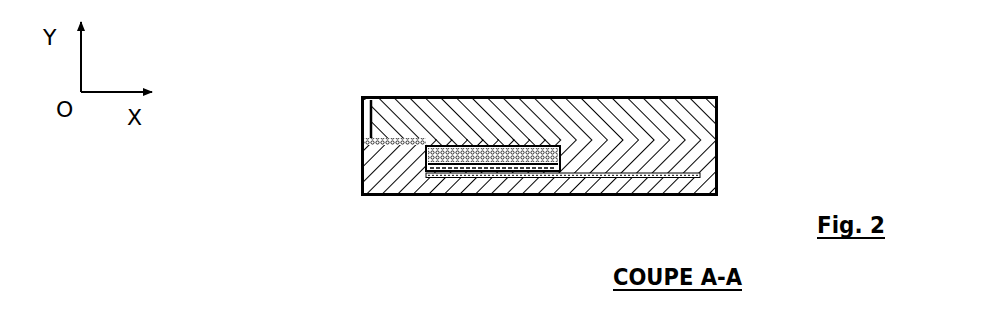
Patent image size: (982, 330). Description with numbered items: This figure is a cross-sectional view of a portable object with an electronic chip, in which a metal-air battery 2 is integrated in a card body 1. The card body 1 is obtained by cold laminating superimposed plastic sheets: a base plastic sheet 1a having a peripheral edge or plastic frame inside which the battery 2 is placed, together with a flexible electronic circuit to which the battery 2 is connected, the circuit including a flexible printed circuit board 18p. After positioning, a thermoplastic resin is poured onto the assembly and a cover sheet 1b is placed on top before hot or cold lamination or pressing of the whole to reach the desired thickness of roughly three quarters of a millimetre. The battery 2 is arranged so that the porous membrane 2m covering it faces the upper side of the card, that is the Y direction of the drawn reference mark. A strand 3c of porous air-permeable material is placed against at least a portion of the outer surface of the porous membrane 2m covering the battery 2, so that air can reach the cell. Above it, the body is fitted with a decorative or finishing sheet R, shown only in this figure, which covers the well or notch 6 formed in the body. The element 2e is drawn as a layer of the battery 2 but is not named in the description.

The decorative or finishing sheet R is at (546, 149).
The card body 1 is at (624, 146).
The base plastic sheet 1a is at (718, 115).
The cover sheet 1b is at (860, 170).
The well 6 is at (367, 115).
The strand of porous air-permeable material 3c is at (397, 150).
The battery 2 is at (560, 151).
The porous membrane 2m is at (512, 142).
The sensor electrode layer 2e is at (472, 175).
The flexible printed circuit board 18p is at (590, 180).